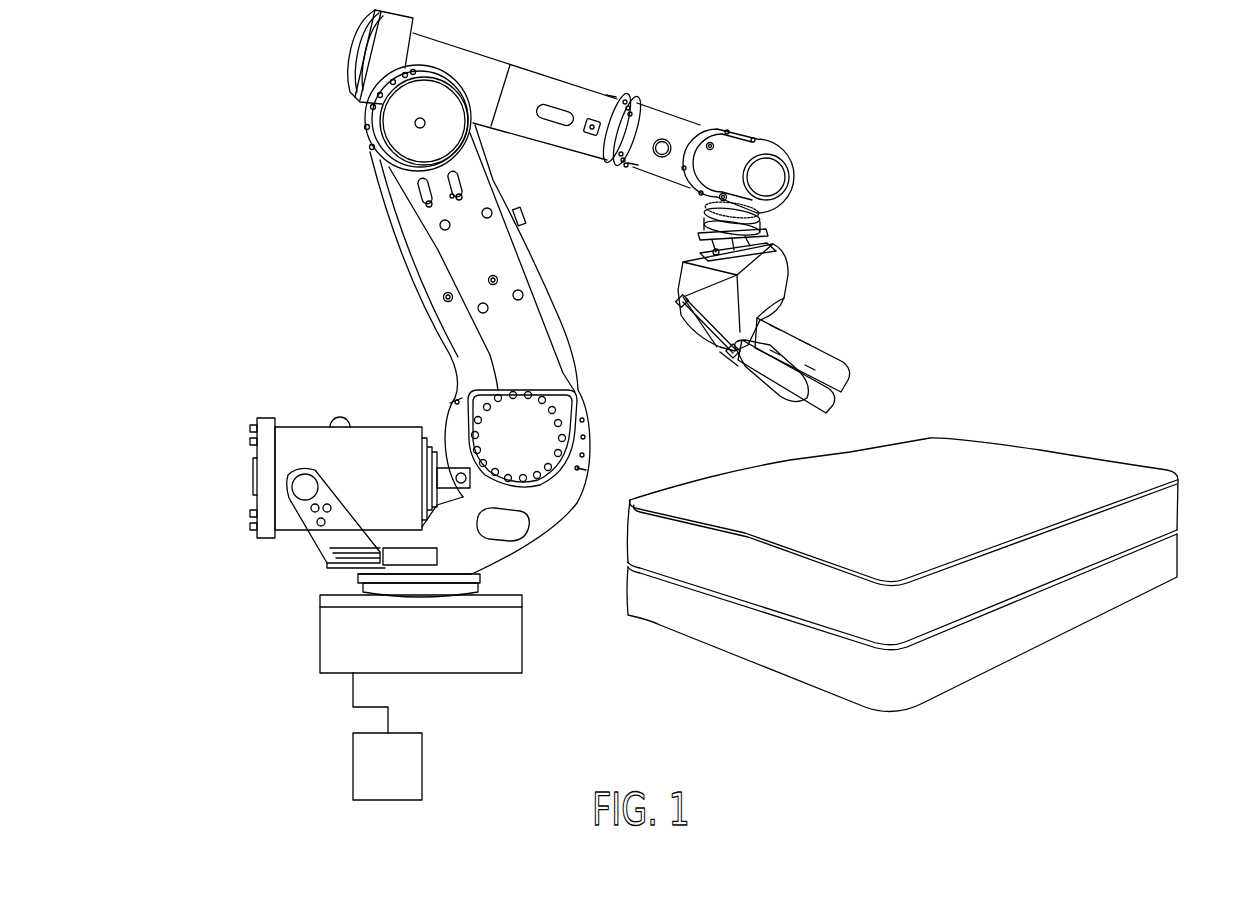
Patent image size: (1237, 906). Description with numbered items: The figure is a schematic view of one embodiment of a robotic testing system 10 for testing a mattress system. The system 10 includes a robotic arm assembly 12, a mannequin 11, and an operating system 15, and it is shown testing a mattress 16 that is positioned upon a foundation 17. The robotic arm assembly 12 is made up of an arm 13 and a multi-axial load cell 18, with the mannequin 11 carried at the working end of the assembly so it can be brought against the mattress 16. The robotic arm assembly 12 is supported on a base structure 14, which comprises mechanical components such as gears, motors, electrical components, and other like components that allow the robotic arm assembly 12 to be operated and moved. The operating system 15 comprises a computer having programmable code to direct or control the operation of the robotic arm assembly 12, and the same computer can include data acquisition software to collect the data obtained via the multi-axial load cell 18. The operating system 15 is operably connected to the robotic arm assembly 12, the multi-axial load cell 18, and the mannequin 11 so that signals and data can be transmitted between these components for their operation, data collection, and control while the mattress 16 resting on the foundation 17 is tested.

The robotic testing system 10 is at (540, 405).
The mannequin 11 is at (807, 292).
The robotic arm assembly 12 is at (404, 266).
The arm 13 is at (730, 148).
The base structure 14 is at (487, 660).
The operating system 15 is at (407, 768).
The mattress 16 is at (1162, 507).
The foundation 17 is at (1162, 565).
The multi-axial load cell 18 is at (773, 219).